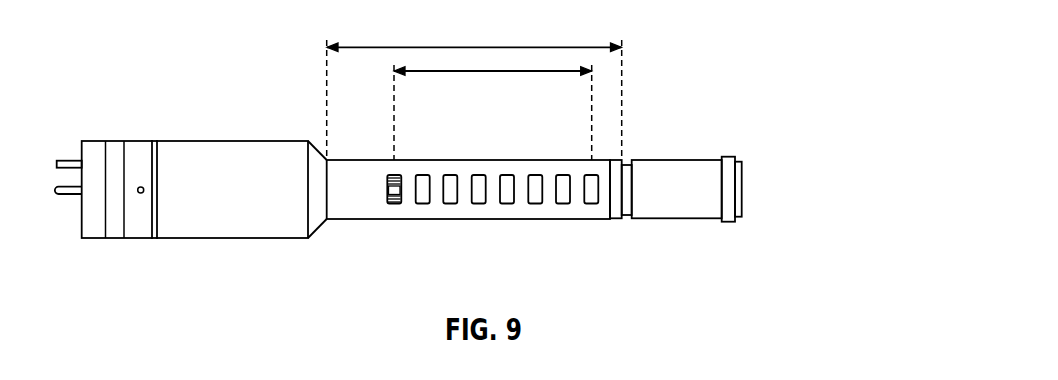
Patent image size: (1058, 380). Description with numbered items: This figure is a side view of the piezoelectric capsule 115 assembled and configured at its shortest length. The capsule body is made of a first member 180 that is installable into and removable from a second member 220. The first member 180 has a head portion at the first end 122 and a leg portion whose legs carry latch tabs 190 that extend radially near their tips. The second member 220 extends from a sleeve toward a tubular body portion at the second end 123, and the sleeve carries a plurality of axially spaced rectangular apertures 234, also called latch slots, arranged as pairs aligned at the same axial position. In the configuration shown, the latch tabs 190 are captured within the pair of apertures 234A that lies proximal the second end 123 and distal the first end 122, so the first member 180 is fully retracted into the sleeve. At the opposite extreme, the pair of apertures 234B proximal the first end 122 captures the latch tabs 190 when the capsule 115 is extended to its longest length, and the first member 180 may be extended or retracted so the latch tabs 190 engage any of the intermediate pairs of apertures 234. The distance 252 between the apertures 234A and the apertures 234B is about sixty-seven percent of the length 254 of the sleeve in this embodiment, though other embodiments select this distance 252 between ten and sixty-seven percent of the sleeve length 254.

The piezoelectric capsule 115 is at (193, 155).
The second end 123 is at (93, 238).
The second member 220 is at (347, 170).
The pair of apertures proximal second end 234A is at (397, 175).
The latch tab 190 is at (395, 204).
The apertures 234 is at (565, 204).
The pair of apertures proximal first end 234B is at (592, 204).
The first member 180 is at (683, 171).
The first end 122 is at (736, 218).
The length of sleeve 254 is at (473, 47).
The distance between apertures 252 is at (492, 71).